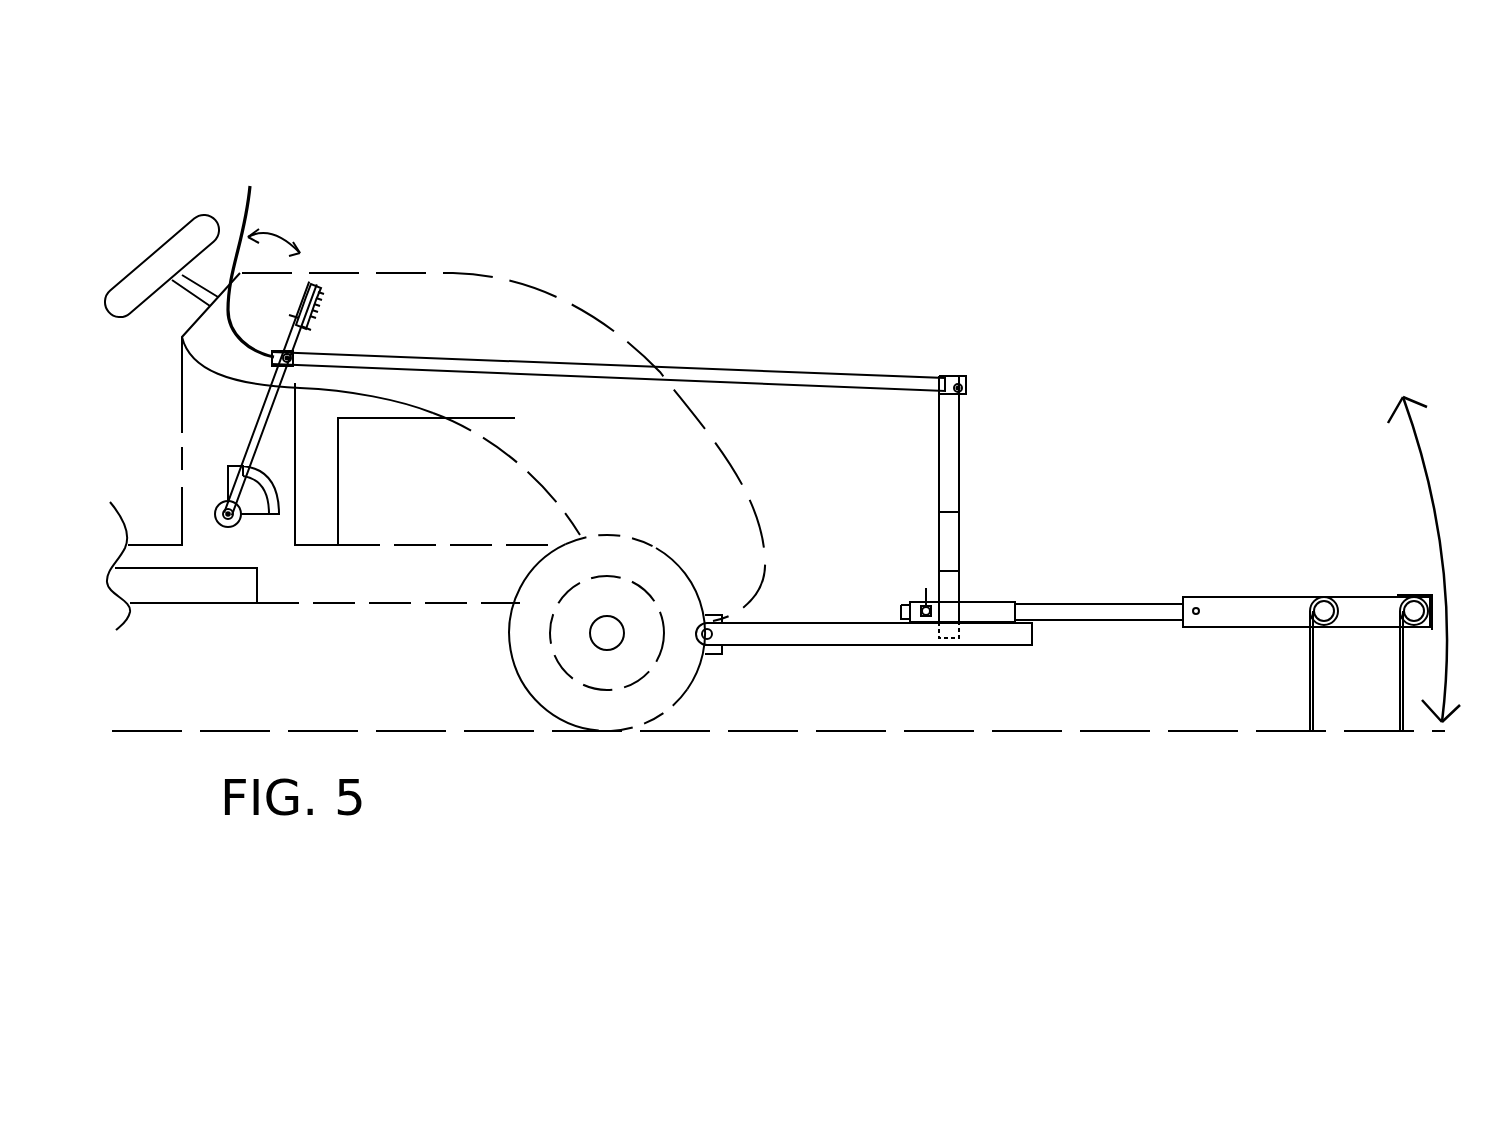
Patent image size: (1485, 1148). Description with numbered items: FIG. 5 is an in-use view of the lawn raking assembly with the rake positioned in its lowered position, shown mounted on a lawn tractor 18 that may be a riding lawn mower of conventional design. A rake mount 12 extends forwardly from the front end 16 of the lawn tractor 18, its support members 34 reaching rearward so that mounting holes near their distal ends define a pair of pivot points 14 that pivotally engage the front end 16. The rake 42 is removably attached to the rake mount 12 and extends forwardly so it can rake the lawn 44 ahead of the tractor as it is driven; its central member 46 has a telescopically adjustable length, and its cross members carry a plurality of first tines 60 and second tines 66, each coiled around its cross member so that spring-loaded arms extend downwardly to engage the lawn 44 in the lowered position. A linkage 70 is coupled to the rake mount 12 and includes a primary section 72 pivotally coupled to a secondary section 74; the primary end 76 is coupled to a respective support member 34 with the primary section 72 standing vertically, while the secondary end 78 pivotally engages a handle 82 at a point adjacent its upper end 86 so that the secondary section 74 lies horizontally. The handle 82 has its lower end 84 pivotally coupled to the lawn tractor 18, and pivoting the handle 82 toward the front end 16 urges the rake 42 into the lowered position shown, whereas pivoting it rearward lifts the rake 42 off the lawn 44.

The rake mount 12 is at (1042, 637).
The pivot points 14 is at (707, 655).
The front end 16 is at (758, 499).
The lawn tractor 18 is at (562, 284).
The support members 34 is at (862, 637).
The rake 42 is at (1317, 564).
The lawn 44 is at (1140, 724).
The central member 46 is at (1258, 587).
The first tines 60 is at (1338, 608).
The second tines 66 is at (1416, 603).
The linkage 70 is at (963, 366).
The primary section 72 is at (958, 434).
The secondary section 74 is at (745, 370).
The primary end 76 is at (948, 640).
The secondary end 78 is at (264, 250).
The handle 82 is at (249, 438).
The lower end 84 is at (231, 526).
The upper end 86 is at (313, 284).